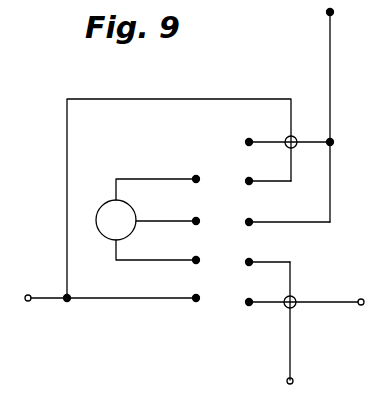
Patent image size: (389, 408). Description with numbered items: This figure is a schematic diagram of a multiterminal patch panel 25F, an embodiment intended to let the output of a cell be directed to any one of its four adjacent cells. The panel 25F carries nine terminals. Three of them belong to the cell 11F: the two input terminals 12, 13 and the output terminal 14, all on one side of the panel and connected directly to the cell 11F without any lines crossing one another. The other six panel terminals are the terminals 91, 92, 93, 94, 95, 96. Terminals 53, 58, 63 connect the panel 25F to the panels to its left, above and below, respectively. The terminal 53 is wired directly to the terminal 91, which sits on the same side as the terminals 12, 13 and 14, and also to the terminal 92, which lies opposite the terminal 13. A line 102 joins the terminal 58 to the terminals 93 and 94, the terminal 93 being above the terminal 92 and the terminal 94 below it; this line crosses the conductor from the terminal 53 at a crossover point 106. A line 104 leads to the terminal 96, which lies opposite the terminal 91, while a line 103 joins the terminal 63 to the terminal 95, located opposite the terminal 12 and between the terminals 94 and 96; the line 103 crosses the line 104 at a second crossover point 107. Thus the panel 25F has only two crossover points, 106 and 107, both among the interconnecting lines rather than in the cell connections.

The cell 11F is at (101, 209).
The input terminal 12 is at (195, 257).
The input terminal 13 is at (195, 176).
The output terminal 14 is at (195, 218).
The panel 25F is at (195, 330).
The terminal 53 is at (30, 295).
The terminal 58 is at (328, 16).
The terminal 63 is at (287, 380).
The terminal 91 is at (195, 295).
The terminal 92 is at (252, 171).
The terminal 93 is at (252, 130).
The terminal 94 is at (252, 212).
The terminal 95 is at (252, 254).
The terminal 96 is at (252, 296).
The line 102 is at (328, 191).
The line 103 is at (291, 271).
The line 104 is at (269, 304).
The crossover point 106 is at (294, 137).
The crossover point 107 is at (295, 300).